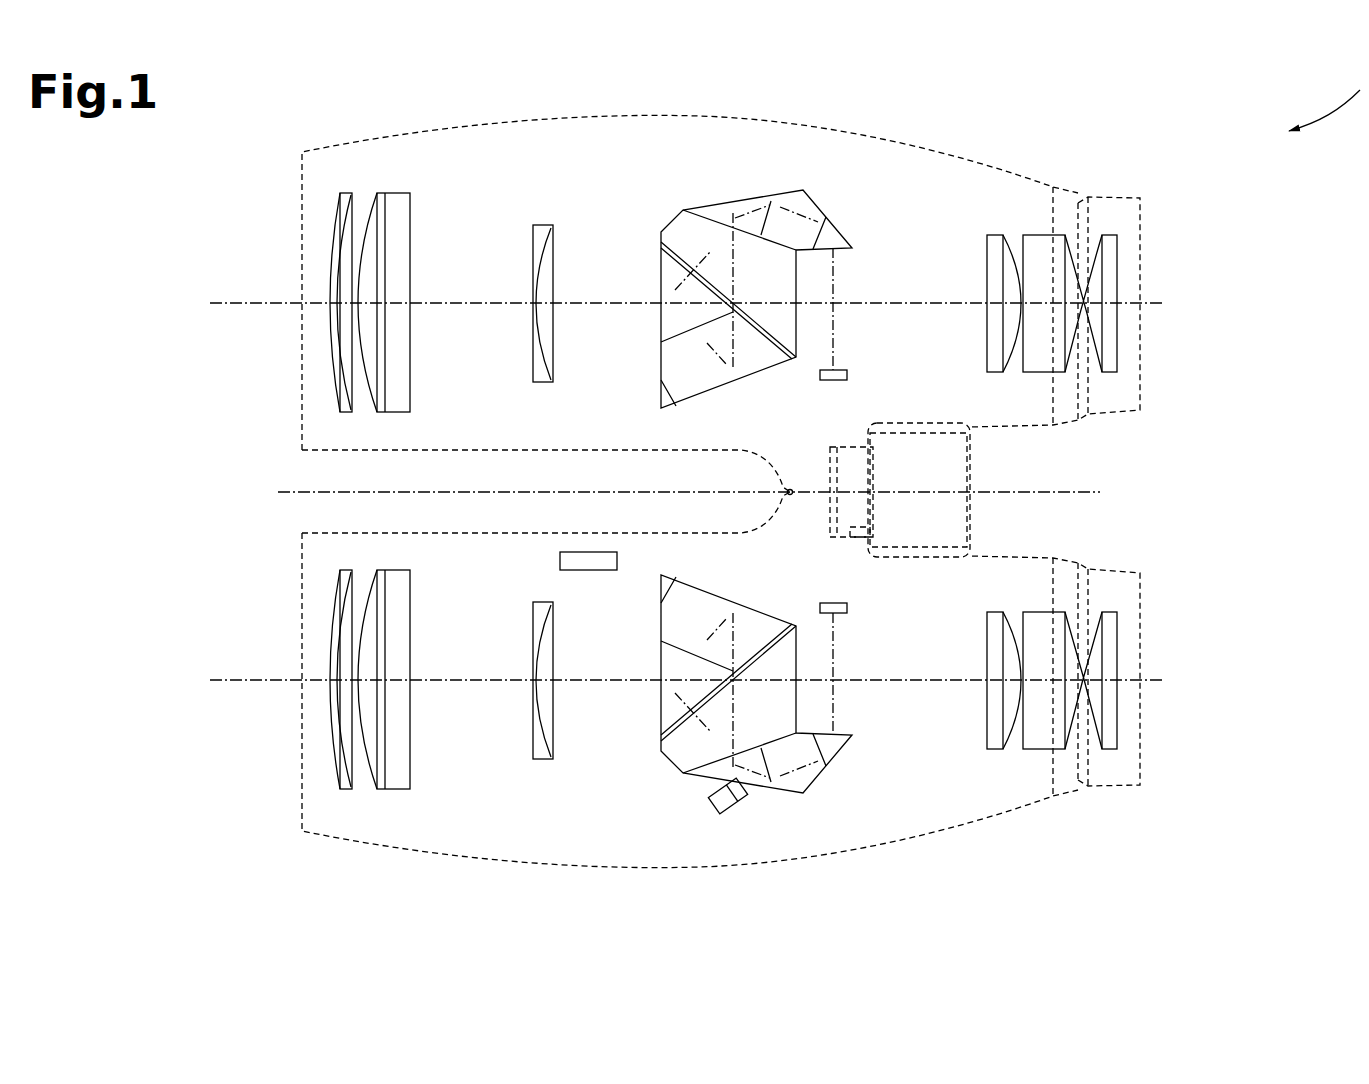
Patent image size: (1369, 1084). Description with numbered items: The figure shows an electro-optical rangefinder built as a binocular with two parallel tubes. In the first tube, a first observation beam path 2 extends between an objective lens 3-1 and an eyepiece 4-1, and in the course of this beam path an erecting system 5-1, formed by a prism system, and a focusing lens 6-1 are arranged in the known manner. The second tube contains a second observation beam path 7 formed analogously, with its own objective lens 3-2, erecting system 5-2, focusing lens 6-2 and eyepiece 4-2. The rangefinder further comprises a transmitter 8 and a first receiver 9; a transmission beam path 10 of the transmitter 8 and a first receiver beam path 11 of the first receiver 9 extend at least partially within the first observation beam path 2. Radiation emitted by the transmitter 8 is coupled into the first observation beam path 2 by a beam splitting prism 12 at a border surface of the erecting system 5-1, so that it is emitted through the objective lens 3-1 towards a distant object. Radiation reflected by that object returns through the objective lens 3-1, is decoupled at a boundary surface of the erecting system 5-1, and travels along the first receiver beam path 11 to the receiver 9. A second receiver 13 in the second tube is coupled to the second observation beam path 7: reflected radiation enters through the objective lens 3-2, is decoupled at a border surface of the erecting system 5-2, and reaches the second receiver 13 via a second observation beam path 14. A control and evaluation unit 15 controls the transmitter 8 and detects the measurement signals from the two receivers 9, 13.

The first observation beam path 2 is at (949, 686).
The objective lens 3-1 is at (292, 636).
The objective lens 3-2 is at (358, 175).
The eyepiece 4-1 is at (1101, 606).
The eyepiece 4-2 is at (1101, 379).
The erecting system 5-1 is at (696, 572).
The erecting system 5-2 is at (615, 250).
The focusing lens 6-1 is at (540, 752).
The focusing lens 6-2 is at (522, 223).
The second observation beam path 7 is at (946, 300).
The transmitter 8 is at (706, 805).
The first receiver 9 is at (811, 601).
The transmission beam path 10 is at (800, 770).
The first receiver beam path 11 is at (837, 648).
The beam splitting prism 12 is at (753, 760).
The second receiver 13 is at (870, 380).
The second observation beam path 14 is at (846, 265).
The control and evaluation unit 15 is at (560, 560).